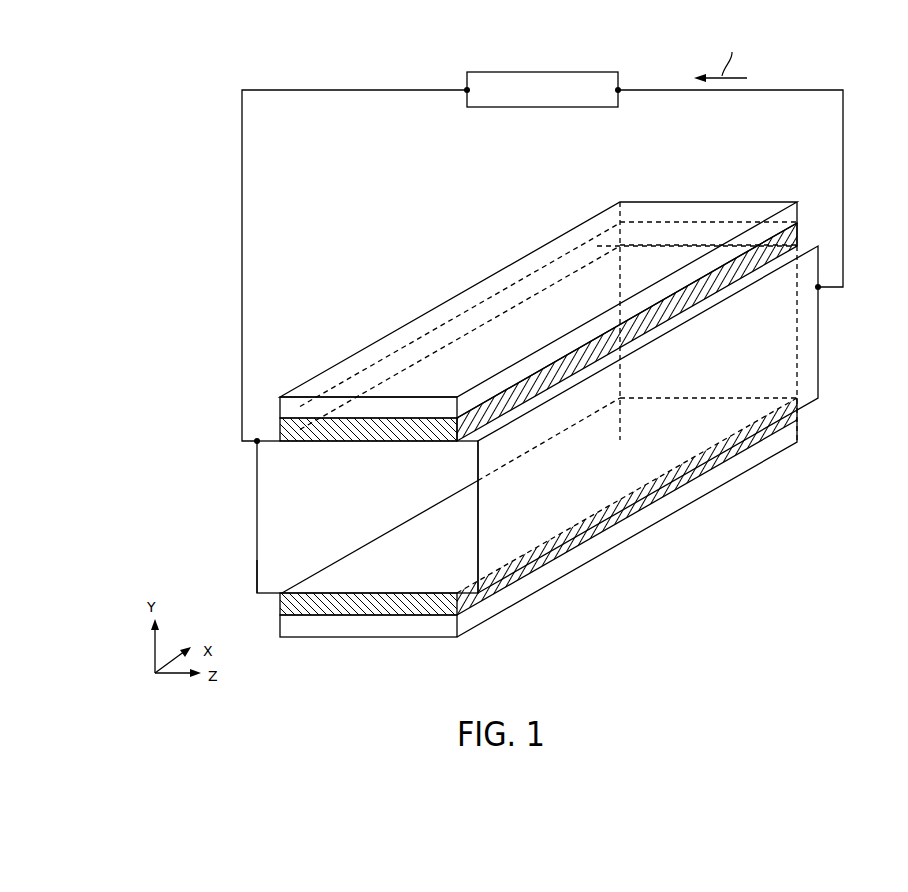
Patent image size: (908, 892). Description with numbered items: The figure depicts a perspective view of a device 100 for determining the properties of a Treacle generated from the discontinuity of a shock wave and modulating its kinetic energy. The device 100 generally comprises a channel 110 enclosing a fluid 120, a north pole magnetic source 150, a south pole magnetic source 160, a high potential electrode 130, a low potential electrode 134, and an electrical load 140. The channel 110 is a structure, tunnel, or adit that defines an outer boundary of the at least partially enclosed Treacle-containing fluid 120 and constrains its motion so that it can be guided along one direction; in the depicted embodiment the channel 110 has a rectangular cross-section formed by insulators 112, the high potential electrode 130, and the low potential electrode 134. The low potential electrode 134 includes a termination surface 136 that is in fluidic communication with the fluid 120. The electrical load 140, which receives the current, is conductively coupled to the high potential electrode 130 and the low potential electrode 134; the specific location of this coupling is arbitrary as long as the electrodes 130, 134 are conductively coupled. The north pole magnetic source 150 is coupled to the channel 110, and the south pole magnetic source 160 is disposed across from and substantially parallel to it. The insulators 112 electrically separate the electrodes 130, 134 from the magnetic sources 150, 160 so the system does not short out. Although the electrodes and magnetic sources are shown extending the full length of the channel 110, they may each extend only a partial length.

The device 100 is at (158, 170).
The channel 110 is at (240, 480).
The insulators 112 is at (803, 240).
The fluid 120 is at (296, 523).
The high potential electrode 130 is at (822, 362).
The low potential electrode 134 is at (257, 580).
The termination surface 136 is at (393, 494).
The electrical load 140 is at (495, 55).
The north pole magnetic source 150 is at (383, 631).
The south pole magnetic source 160 is at (406, 324).